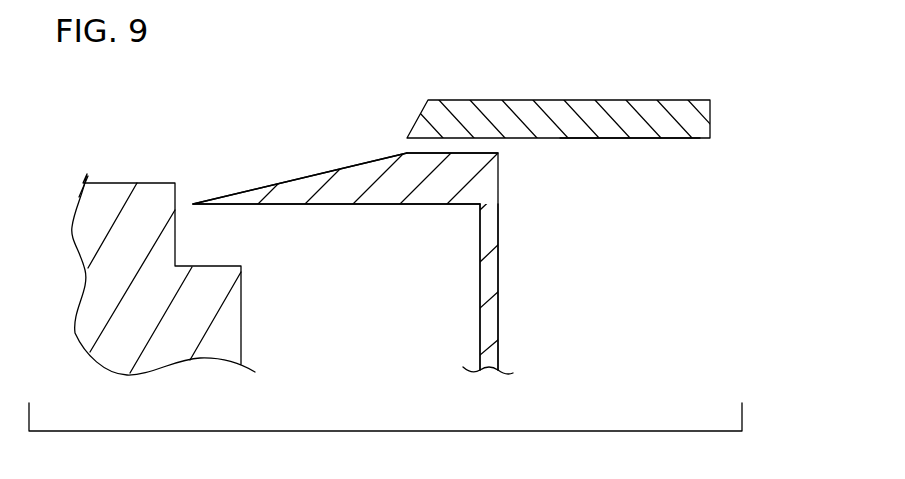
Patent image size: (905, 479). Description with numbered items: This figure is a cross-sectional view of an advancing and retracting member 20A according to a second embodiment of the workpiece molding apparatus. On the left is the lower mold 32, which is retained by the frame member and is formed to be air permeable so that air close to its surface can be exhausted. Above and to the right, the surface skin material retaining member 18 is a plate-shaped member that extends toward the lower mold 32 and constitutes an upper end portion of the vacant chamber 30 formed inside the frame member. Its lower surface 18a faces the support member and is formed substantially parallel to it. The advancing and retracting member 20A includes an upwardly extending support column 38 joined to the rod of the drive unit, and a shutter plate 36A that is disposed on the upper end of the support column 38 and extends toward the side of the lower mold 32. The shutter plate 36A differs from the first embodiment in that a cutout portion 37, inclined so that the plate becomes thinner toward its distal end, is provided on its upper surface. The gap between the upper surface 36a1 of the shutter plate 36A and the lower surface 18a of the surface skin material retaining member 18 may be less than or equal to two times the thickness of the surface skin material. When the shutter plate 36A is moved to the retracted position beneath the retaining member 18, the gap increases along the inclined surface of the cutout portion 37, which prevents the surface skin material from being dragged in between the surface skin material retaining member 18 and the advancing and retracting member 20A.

The surface skin material retaining member 18 is at (558, 111).
The lower surface 18a is at (617, 139).
The advancing and retracting member 20A is at (511, 226).
The vacant chamber 30 is at (628, 327).
The lower mold 32 is at (100, 282).
The shutter plate 36A is at (383, 188).
The upper surface 36a1 is at (458, 152).
The cutout portion 37 is at (317, 172).
The support column 38 is at (488, 285).